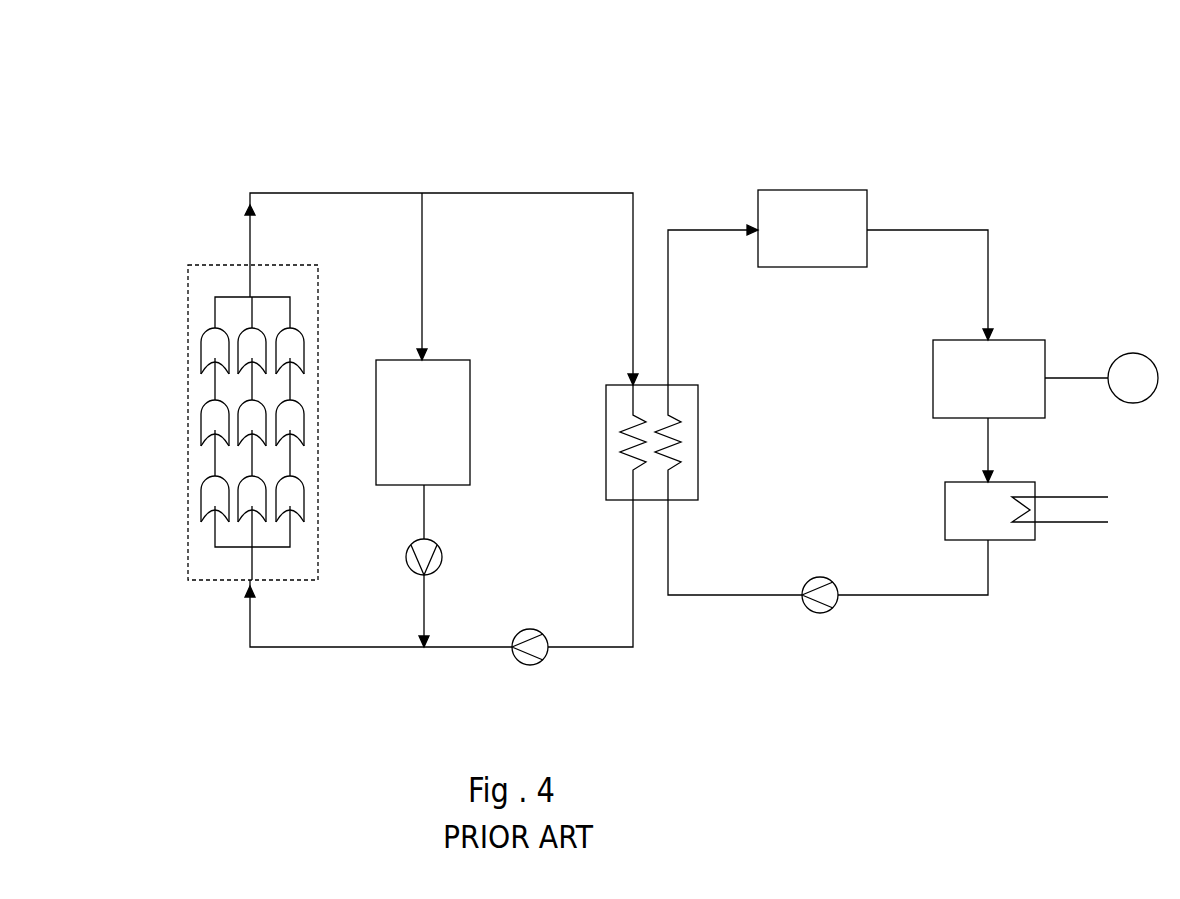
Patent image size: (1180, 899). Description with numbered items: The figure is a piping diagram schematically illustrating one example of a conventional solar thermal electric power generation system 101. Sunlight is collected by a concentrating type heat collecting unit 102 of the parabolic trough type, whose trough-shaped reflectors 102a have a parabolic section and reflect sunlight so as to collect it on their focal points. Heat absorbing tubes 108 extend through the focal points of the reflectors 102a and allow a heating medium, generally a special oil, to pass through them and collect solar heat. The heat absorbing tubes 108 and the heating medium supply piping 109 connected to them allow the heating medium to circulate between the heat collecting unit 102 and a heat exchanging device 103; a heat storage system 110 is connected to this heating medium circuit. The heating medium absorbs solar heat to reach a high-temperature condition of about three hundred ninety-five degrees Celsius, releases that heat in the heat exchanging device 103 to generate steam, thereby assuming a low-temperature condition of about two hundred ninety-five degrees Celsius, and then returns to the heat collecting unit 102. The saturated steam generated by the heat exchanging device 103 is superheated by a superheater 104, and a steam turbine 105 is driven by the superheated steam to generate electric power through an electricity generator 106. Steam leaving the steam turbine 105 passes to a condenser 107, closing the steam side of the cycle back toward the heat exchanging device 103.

The solar thermal electric power generation system 101 is at (650, 136).
The heat collecting unit 102 is at (221, 556).
The trough-shaped reflector 102a is at (205, 500).
The heat exchanging device 103 is at (648, 500).
The superheater 104 is at (812, 190).
The steam turbine 105 is at (1025, 340).
The electricity generator 106 is at (1133, 353).
The condenser 107 is at (1017, 540).
The heat absorbing tube 108 is at (213, 320).
The heating medium supply piping 109 is at (323, 193).
The heat storage system 110 is at (458, 360).